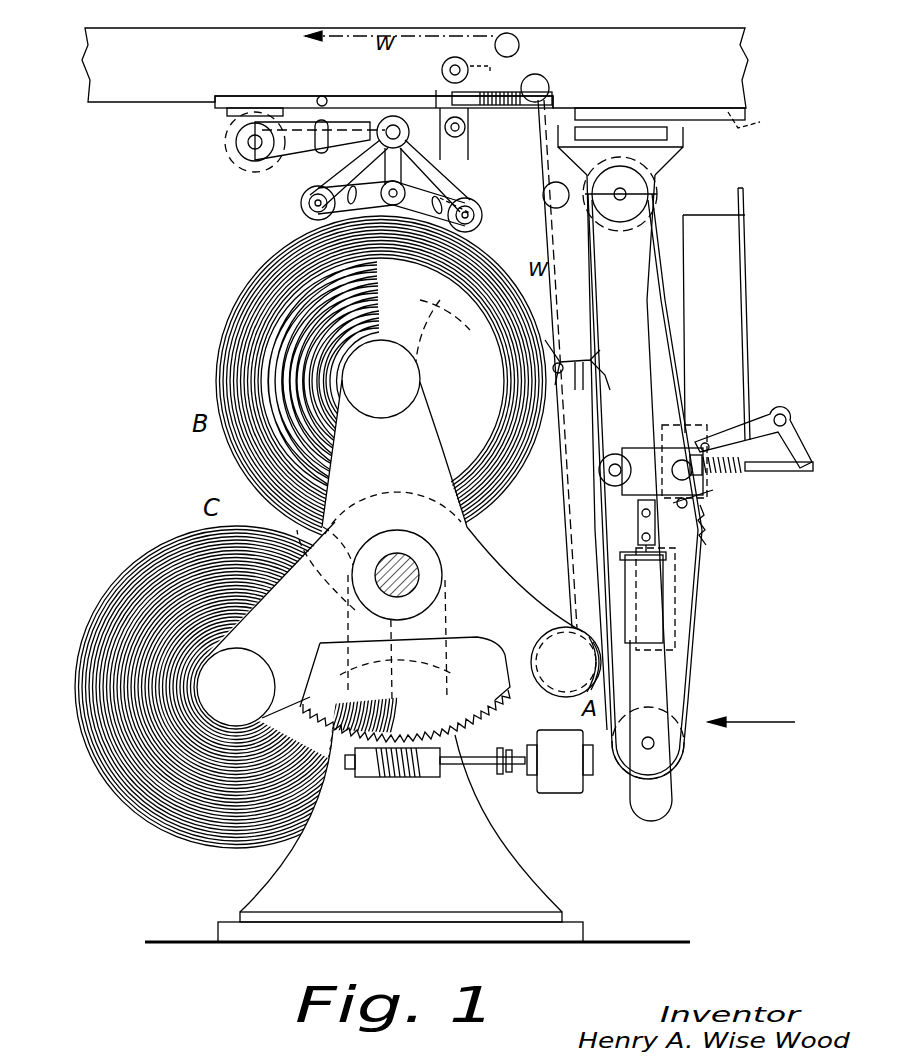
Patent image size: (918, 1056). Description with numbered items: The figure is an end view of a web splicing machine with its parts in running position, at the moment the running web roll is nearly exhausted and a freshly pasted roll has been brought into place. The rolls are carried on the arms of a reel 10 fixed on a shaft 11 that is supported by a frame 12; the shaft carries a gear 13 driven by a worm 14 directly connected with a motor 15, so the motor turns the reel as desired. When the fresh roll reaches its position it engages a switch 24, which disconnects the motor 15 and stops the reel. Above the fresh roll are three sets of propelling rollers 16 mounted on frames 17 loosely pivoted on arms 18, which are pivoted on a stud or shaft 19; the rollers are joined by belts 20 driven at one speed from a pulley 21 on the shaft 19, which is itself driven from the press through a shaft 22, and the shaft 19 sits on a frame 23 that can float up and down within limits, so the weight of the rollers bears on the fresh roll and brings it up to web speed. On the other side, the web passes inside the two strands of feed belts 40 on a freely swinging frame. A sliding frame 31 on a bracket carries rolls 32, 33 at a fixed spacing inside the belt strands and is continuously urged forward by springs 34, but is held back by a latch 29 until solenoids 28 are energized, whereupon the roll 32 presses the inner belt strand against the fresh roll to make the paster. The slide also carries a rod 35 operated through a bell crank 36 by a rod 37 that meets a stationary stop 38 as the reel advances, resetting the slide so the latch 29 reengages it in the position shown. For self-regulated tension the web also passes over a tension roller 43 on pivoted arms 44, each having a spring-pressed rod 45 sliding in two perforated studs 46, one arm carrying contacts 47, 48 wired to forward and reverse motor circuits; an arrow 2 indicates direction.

The direction arrow 2 is at (751, 710).
The reel 10 is at (490, 568).
The shaft 11 is at (418, 578).
The frame 12 is at (497, 862).
The gear 13 is at (485, 716).
The worm 14 is at (382, 780).
The motor 15 is at (560, 792).
The propelling rollers 16 is at (305, 212).
The frames 17 is at (360, 190).
The arms 18 is at (440, 168).
The stud or shaft 19 is at (406, 131).
The belts 20 is at (452, 200).
The pulley 21 is at (405, 100).
The shaft 22 is at (252, 148).
The frame 23 is at (305, 145).
The switch 24 is at (577, 370).
The solenoids or electro-magnets 28 is at (647, 597).
The latches 29 is at (638, 506).
The sliding frames 31 is at (645, 455).
The roll 32 is at (612, 455).
The roll 33 is at (712, 500).
The springs 34 is at (736, 476).
The rod 35 is at (770, 472).
The bell crank 36 is at (795, 440).
The rod 37 is at (748, 322).
The stop 38 is at (732, 128).
The feed belts 40 is at (586, 290).
The tension roller 43 is at (495, 45).
The pivoted arms 44 is at (442, 70).
The spring-pressed rod 45 is at (506, 104).
The perforated studs 46 is at (525, 85).
The contact 47 is at (450, 96).
The contact 48 is at (470, 92).